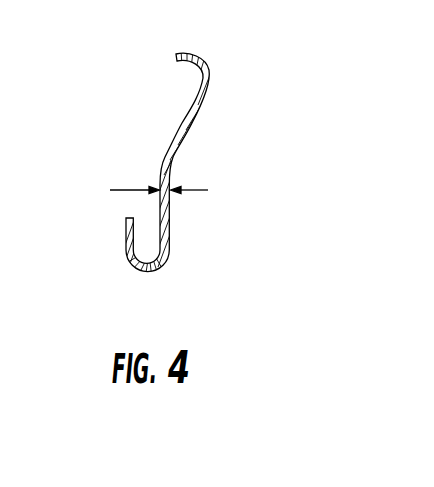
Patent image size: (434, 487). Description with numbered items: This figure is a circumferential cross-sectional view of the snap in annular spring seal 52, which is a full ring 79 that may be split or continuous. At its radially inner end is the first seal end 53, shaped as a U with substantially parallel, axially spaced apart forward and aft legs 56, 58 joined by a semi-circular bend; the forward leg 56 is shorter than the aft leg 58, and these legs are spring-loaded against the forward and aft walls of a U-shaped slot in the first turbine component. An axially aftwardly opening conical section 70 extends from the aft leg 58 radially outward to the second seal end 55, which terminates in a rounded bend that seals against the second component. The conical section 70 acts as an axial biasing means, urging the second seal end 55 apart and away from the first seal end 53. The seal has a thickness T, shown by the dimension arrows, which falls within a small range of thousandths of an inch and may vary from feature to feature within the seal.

The snap in annular spring seal 52 is at (173, 188).
The first seal end 53 is at (140, 279).
The second seal end 55 is at (199, 54).
The forward leg 56 is at (124, 224).
The aft leg 58 is at (170, 224).
The conical section 70 is at (189, 121).
The full 360-degree ring 79 is at (170, 238).
The thickness T is at (122, 190).